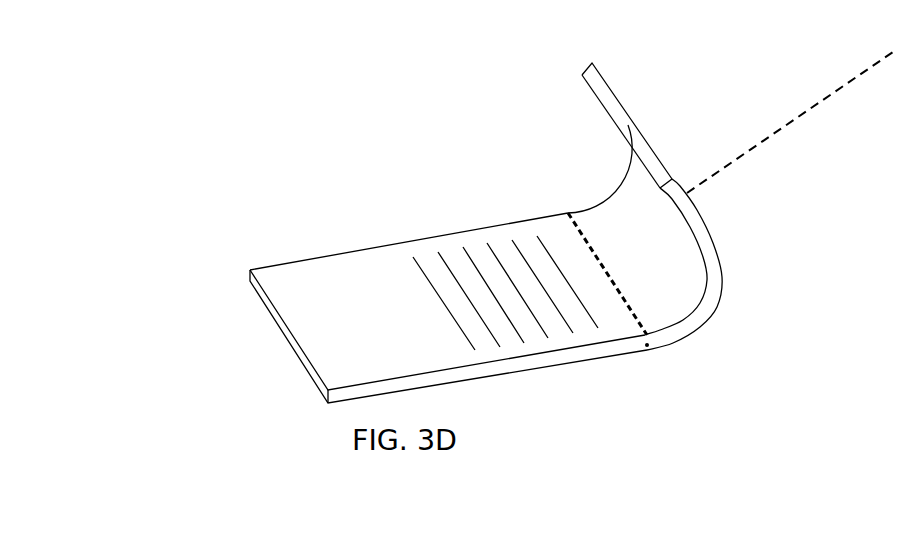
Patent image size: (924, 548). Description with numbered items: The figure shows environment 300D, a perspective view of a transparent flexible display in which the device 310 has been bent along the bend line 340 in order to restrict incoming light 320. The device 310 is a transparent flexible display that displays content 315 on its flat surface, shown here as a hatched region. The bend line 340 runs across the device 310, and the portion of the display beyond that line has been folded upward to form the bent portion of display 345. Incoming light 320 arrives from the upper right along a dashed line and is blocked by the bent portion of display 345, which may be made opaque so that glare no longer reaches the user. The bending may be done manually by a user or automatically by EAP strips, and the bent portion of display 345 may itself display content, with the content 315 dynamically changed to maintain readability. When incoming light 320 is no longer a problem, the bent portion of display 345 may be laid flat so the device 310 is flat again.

The environment 300D is at (406, 146).
The device 310 is at (338, 254).
The content 315 is at (440, 298).
The incoming light 320 is at (795, 119).
The bend line 340 is at (604, 268).
The bent portion of display 345 is at (621, 211).